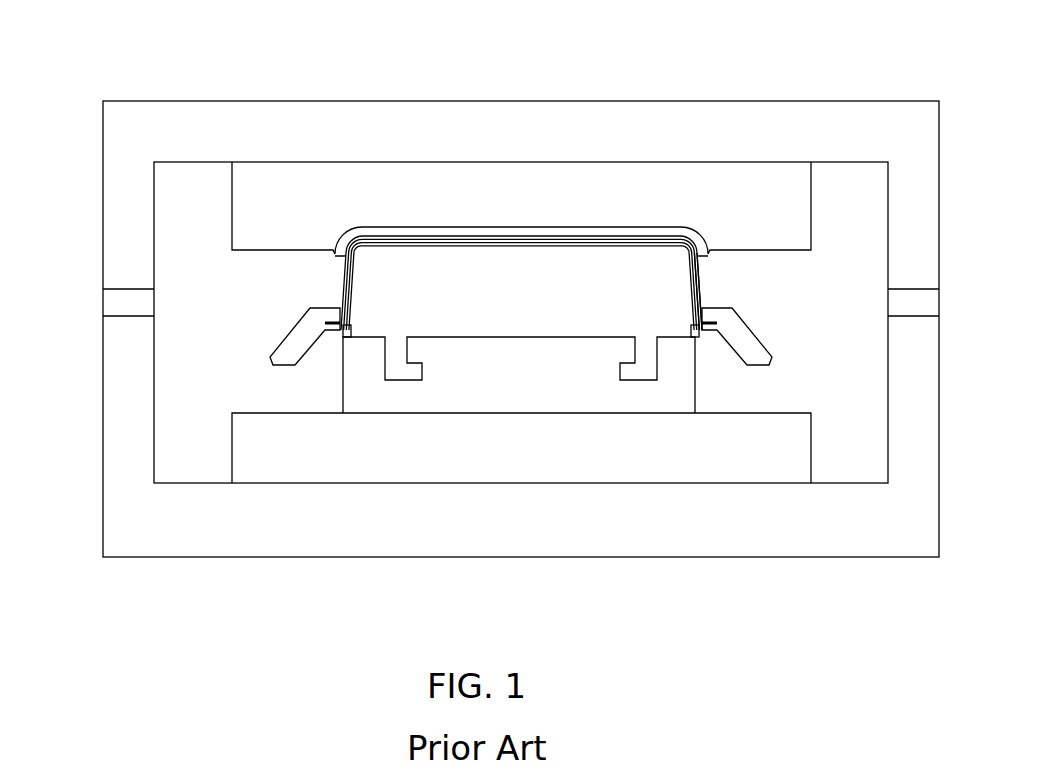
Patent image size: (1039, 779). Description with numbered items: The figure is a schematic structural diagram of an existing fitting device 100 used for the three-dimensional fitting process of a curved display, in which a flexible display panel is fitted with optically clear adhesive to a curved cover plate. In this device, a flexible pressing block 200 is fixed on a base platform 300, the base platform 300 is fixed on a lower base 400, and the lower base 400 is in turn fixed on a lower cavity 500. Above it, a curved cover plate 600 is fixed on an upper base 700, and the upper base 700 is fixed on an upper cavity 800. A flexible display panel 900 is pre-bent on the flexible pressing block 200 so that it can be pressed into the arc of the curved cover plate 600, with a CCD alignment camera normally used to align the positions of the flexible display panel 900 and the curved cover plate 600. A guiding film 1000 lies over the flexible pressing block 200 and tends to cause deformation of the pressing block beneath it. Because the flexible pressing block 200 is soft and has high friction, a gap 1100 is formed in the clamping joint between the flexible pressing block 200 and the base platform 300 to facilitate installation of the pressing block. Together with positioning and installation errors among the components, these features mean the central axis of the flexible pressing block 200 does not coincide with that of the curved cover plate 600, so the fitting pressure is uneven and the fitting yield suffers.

The fitting device 100 is at (114, 66).
The flexible pressing block 200 is at (520, 263).
The base platform 300 is at (522, 400).
The lower base 400 is at (463, 458).
The lower cavity 500 is at (368, 533).
The curved cover plate 600 is at (492, 230).
The upper base 700 is at (312, 205).
The upper cavity 800 is at (243, 137).
The flexible display panel 900 is at (378, 235).
The guiding film 1000 is at (697, 290).
The gap 1100 is at (773, 584).